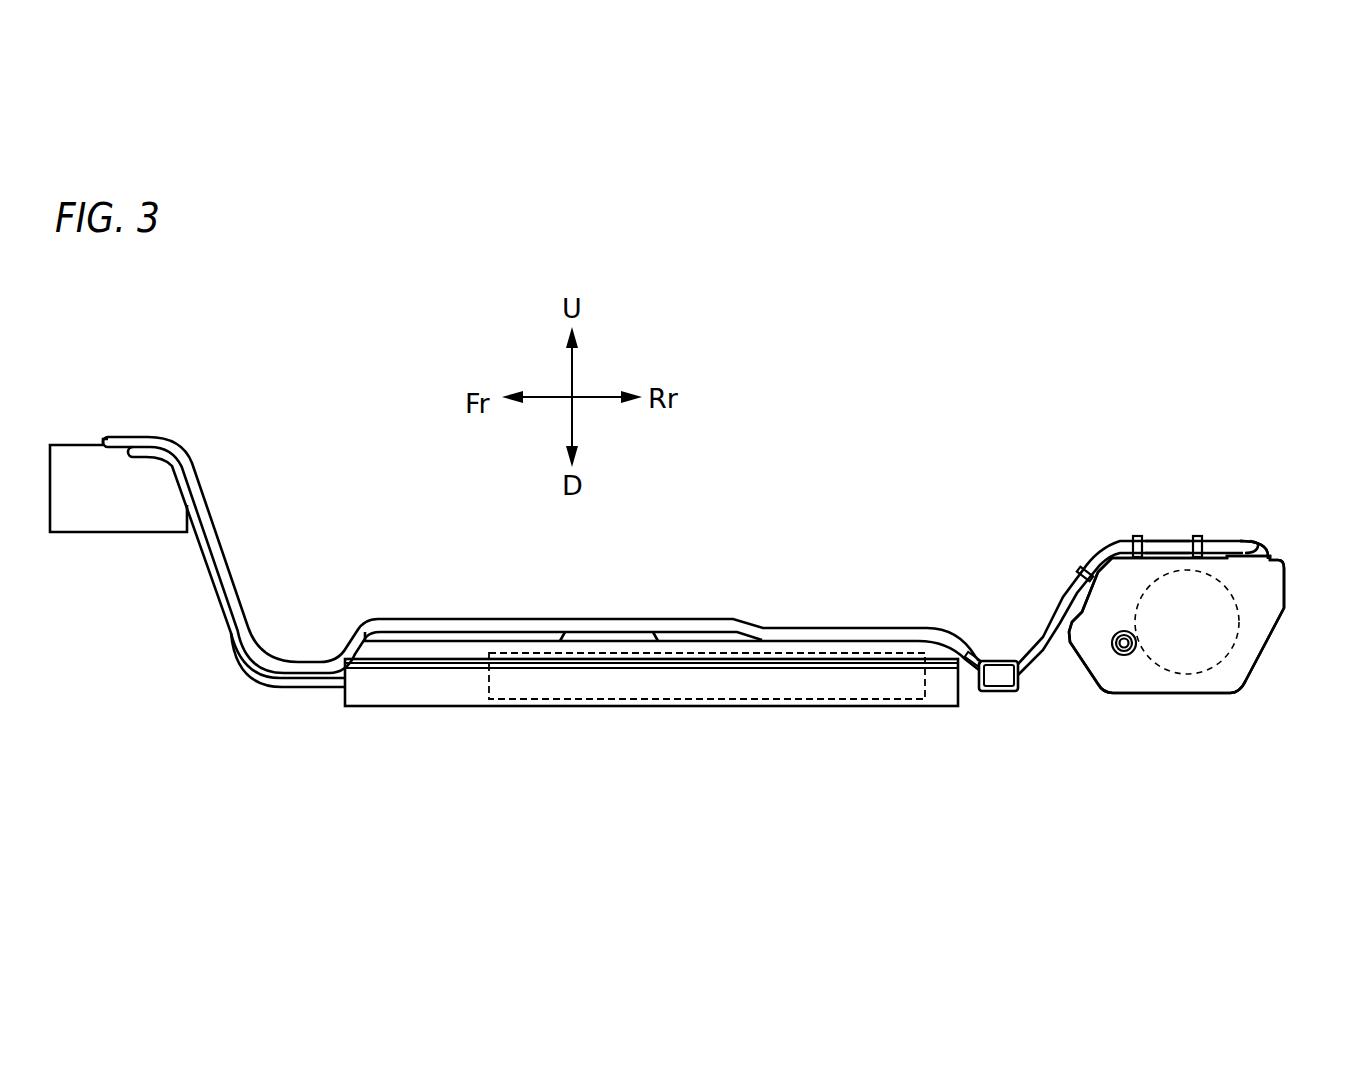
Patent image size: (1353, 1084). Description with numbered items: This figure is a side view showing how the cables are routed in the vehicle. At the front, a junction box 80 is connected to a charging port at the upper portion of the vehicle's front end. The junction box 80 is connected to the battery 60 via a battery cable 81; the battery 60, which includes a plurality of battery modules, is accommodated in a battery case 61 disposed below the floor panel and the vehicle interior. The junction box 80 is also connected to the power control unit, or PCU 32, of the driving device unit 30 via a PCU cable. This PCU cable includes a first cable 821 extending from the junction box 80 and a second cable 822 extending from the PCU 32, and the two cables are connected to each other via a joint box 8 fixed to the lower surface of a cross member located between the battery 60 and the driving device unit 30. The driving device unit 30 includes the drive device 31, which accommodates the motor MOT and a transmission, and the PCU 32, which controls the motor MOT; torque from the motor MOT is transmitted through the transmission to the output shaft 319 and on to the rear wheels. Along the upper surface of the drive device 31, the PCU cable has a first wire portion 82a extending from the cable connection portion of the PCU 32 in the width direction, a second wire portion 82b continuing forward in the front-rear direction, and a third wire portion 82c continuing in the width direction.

The junction box 80 is at (81, 481).
The battery cable 81 is at (300, 690).
The first cable 821 is at (474, 618).
The second cable 822 is at (1047, 650).
The third wire portion 82c is at (1108, 557).
The second wire portion 82b is at (1172, 541).
The first wire portion 82a is at (1268, 540).
The battery 60 is at (565, 700).
The battery case 61 is at (880, 707).
The joint box 8 is at (1000, 692).
The driving device unit 30 is at (1266, 643).
The drive device 31 is at (1285, 610).
The power control unit (PCU) 32 is at (1273, 552).
The output shaft 319 is at (1127, 653).
The motor MOT is at (1227, 655).